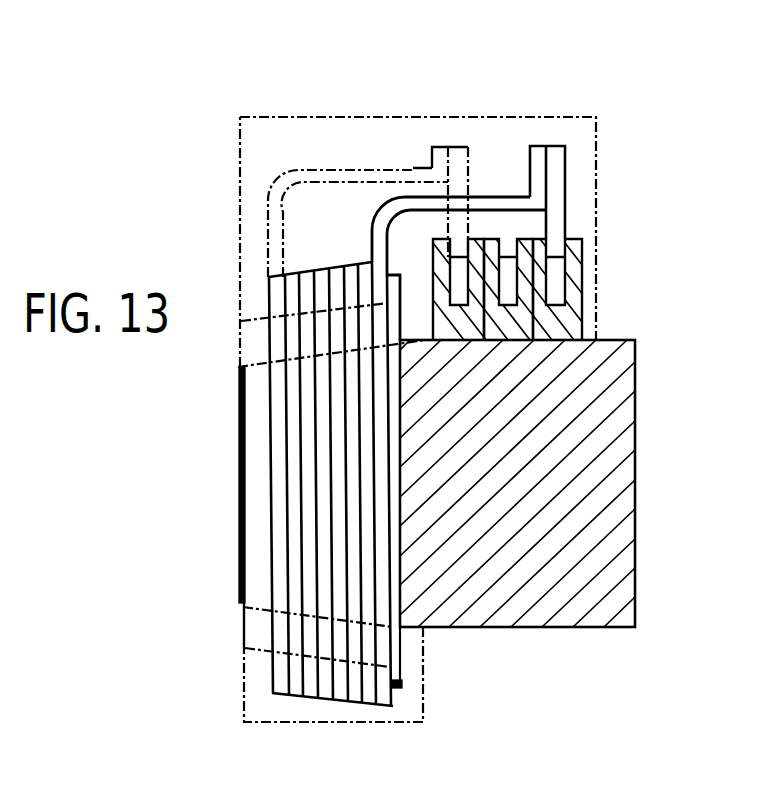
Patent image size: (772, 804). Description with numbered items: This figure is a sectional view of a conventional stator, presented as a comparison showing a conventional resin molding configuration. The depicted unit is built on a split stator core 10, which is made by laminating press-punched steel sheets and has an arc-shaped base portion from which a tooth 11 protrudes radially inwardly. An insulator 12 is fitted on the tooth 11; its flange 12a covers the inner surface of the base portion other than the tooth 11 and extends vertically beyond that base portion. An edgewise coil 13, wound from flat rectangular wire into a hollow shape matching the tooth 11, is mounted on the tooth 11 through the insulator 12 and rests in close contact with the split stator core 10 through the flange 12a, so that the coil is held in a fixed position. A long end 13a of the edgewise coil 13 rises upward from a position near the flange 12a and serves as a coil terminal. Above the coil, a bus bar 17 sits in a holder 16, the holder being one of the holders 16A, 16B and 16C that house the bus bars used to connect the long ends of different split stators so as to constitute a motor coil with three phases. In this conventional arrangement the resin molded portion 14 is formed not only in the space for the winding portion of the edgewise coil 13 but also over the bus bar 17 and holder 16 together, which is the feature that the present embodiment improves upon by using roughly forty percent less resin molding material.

The split stator core 10 is at (625, 514).
The tooth 11 is at (242, 485).
The insulator 12 is at (258, 428).
The flange 12a is at (398, 688).
The edgewise coil 13 is at (288, 550).
The long end 13a is at (416, 197).
The resin molded portion 14 is at (362, 117).
The holder 16 is at (563, 292).
The holder 16A is at (573, 267).
The holder 16B is at (505, 322).
The holder 16C is at (470, 345).
The bus bar 17 is at (567, 155).